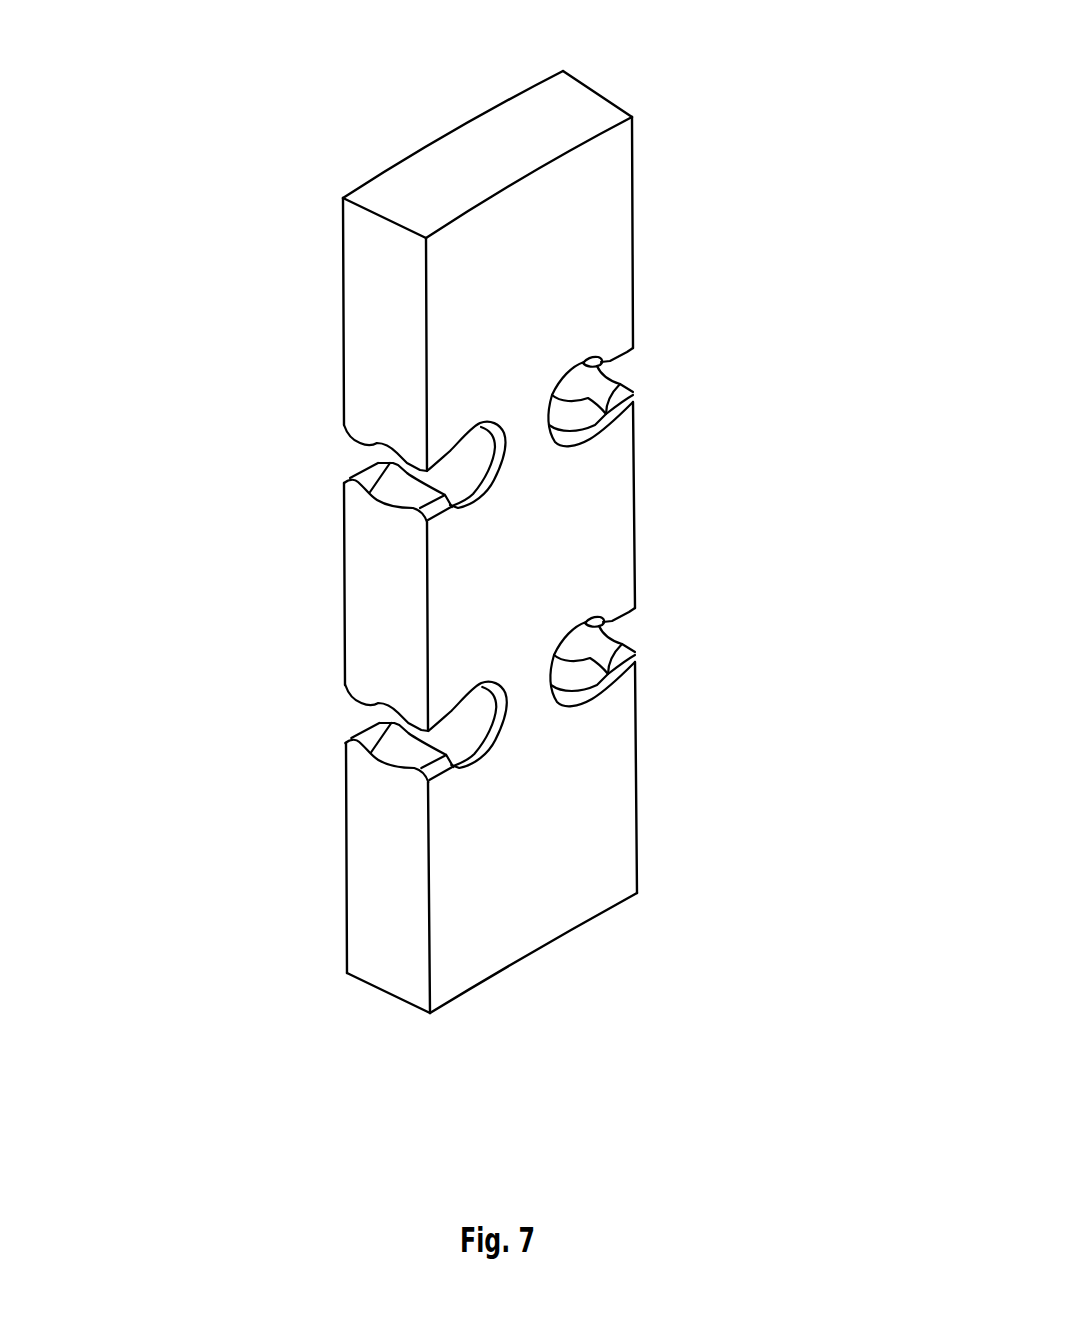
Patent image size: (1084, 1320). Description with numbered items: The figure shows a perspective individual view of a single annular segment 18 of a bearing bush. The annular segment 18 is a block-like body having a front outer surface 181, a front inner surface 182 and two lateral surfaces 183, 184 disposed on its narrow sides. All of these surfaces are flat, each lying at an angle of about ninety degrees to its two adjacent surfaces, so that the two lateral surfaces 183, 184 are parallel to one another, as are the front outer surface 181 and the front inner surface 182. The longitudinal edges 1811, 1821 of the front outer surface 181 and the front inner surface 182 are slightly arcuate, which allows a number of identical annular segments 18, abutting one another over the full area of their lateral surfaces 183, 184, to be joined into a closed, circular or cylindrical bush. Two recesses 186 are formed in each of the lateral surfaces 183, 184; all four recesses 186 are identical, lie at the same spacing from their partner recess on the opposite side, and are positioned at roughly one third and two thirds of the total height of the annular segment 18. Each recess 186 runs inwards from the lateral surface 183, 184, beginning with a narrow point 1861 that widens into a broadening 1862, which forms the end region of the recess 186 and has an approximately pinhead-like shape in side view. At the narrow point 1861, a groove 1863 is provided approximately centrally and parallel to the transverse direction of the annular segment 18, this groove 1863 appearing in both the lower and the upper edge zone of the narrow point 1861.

The annular segment 18 is at (485, 568).
The front outer surface 181 is at (610, 119).
The longitudinal edge 1811 is at (422, 142).
The front inner surface 182 is at (562, 1015).
The longitudinal edge 1821 is at (577, 928).
The lateral surface 183 is at (652, 488).
The lateral surface 184 is at (380, 585).
The recess 186 is at (491, 595).
The narrow point 1861 is at (420, 762).
The broadening 1862 is at (472, 723).
The groove 1863 is at (400, 458).